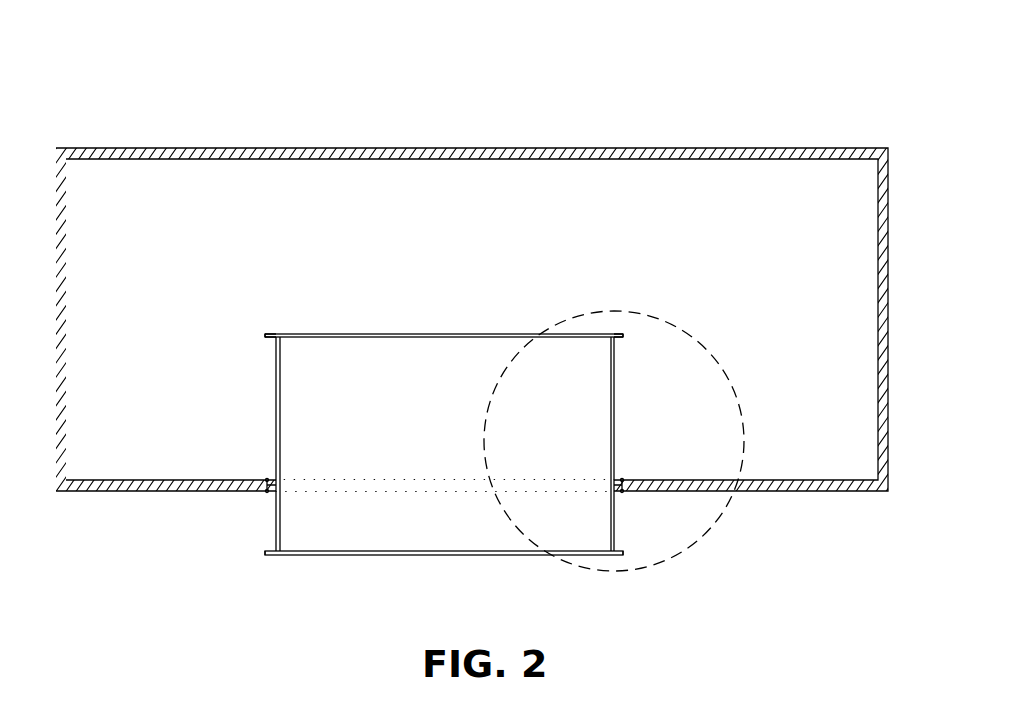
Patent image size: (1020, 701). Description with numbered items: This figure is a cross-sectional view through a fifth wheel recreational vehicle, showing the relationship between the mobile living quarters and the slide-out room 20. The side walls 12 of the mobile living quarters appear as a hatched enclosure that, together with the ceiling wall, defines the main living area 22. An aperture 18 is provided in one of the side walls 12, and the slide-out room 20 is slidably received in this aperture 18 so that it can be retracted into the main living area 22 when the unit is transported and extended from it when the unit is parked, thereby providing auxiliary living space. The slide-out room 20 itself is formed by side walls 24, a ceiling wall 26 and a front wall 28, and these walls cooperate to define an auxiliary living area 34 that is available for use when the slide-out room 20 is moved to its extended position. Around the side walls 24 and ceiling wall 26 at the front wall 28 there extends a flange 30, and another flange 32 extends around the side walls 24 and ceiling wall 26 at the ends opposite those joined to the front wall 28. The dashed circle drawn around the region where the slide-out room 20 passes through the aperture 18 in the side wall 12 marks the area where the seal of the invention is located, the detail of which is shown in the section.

The side walls 12 is at (891, 195).
The aperture 18 is at (621, 491).
The slide-out room 20 is at (437, 454).
The main living area 22 is at (283, 198).
The side walls 24 is at (281, 408).
The ceiling wall 26 is at (433, 334).
The front wall 28 is at (440, 556).
The flange 30 is at (268, 555).
The flange 32 is at (273, 338).
The auxiliary living area 34 is at (427, 456).